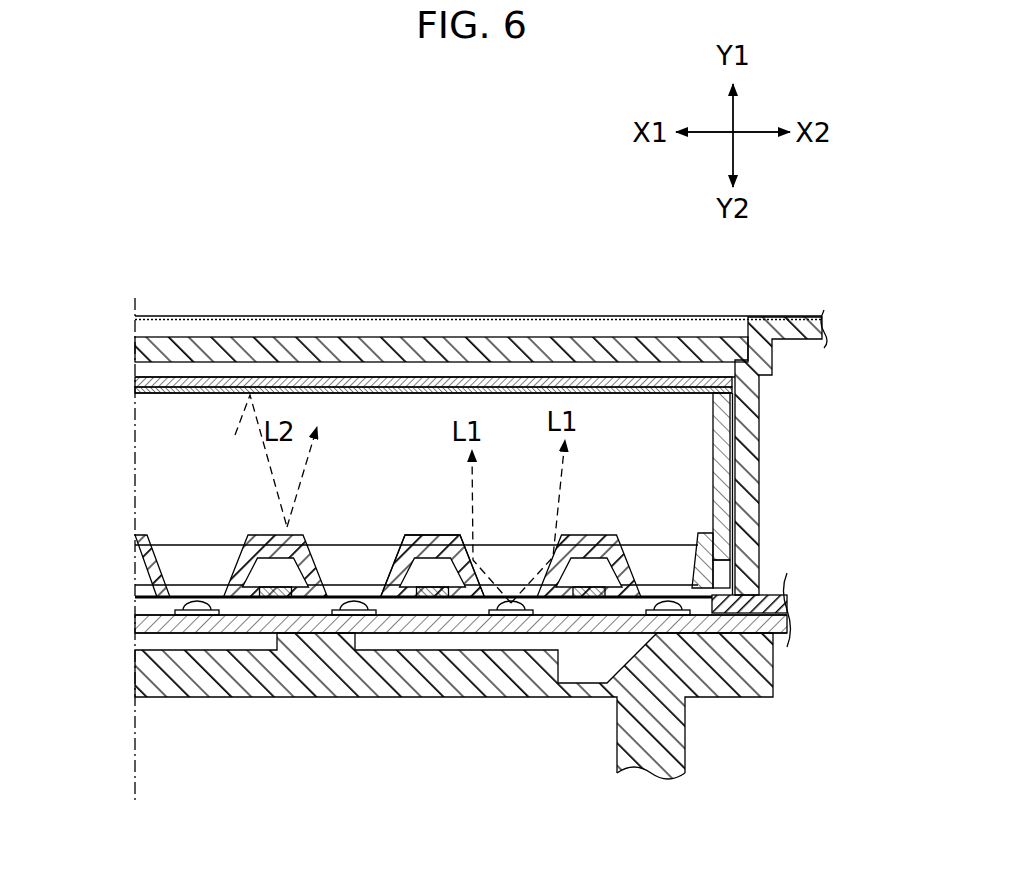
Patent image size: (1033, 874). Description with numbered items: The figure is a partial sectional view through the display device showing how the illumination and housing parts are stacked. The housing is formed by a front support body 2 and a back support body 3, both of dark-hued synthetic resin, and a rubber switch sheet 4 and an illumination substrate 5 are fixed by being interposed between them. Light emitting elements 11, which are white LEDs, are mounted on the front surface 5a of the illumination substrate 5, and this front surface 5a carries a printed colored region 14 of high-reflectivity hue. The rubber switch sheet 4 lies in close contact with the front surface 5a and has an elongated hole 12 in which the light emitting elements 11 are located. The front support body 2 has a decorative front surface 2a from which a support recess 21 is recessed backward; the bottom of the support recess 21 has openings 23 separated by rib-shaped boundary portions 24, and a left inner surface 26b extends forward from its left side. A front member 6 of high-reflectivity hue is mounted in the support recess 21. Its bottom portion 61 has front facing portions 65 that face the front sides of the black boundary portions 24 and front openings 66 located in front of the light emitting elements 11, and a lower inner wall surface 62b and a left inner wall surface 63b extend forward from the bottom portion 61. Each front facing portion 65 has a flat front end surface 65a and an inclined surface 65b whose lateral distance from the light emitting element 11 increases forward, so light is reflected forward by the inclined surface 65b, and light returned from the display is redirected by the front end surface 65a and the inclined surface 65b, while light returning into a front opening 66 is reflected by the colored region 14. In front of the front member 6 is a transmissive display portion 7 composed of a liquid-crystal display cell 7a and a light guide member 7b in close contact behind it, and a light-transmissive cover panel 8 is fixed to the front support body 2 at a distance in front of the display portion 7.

The front support body 2 is at (760, 420).
The front surface 2a is at (797, 318).
The back support body 3 is at (765, 680).
The rubber switch sheet 4 is at (783, 608).
The illumination substrate 5 is at (430, 624).
The front surface 5a is at (300, 642).
The front member 6 is at (712, 549).
The display portion 7 is at (448, 262).
The liquid-crystal display cell 7a is at (472, 382).
The light guide member 7b is at (515, 390).
The cover panel 8 is at (648, 350).
The light emitting element 11 is at (215, 606).
The elongated hole 12 is at (700, 640).
The colored region 14 is at (575, 625).
The support recess 21 is at (698, 370).
The opening 23 is at (185, 608).
The boundary portion 24 is at (275, 596).
The left inner surface 26b is at (735, 492).
The bottom portion 61 is at (175, 533).
The lower inner wall surface 62b is at (172, 405).
The left inner wall surface 63b is at (708, 452).
The front facing portion 65 is at (257, 532).
The front end surface 65a is at (312, 545).
The inclined surface 65b is at (440, 538).
The front opening 66 is at (192, 537).